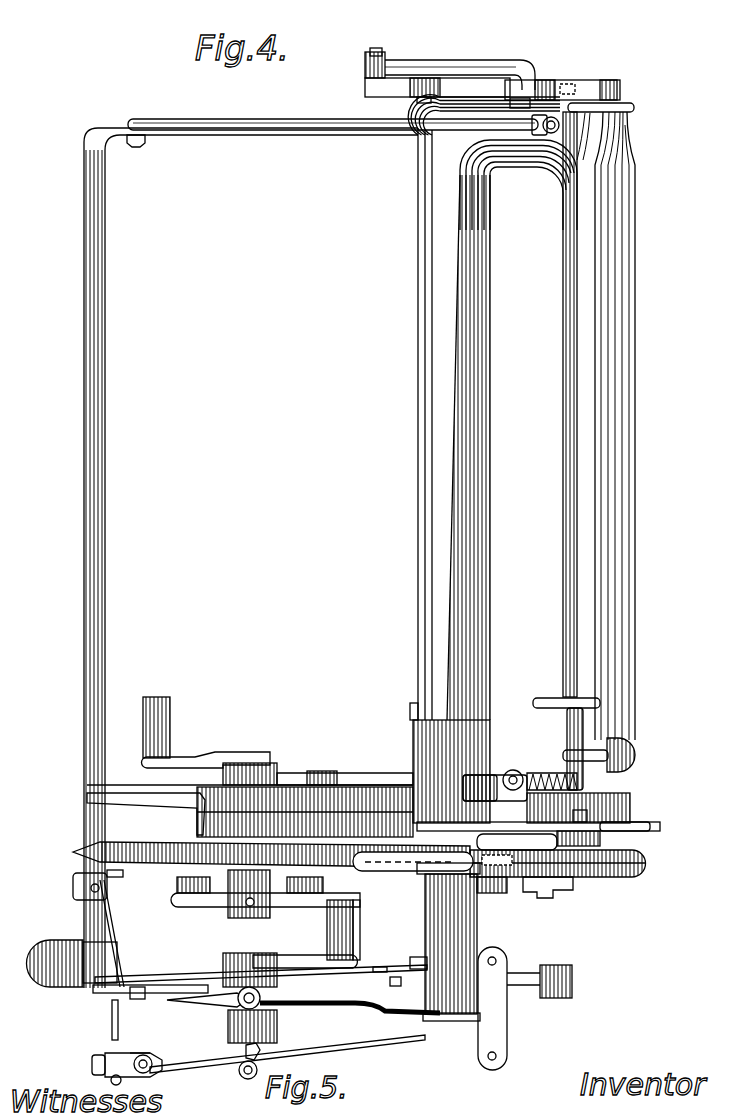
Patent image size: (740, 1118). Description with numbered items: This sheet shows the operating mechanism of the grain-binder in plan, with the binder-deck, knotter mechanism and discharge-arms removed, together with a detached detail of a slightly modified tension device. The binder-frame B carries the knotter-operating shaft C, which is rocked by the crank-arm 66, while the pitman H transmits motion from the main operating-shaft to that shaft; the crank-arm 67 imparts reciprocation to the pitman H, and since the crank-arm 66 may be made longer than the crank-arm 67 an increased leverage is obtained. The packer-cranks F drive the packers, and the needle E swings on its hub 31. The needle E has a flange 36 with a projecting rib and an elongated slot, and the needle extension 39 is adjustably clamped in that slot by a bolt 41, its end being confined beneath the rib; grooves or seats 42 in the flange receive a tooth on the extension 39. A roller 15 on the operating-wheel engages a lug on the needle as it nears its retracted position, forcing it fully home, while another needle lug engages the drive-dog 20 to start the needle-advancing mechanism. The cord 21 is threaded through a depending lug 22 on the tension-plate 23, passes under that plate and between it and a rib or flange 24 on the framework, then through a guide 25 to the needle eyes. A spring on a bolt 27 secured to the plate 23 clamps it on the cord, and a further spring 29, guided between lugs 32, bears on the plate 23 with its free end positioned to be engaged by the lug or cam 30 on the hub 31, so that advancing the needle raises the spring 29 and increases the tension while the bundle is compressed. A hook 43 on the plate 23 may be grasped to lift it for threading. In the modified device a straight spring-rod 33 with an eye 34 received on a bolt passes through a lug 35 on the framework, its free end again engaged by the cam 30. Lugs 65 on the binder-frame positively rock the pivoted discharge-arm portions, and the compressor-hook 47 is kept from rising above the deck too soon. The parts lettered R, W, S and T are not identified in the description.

In FIG. 4, the pitman H is at (449, 72).
In FIG. 4, the crank-arm 66 is at (562, 93).
In FIG. 4, the crank-arm 67 is at (384, 82).
In FIG. 4, the knotter-operating shaft C is at (612, 106).
In FIG. 4, the binder-frame B is at (630, 416).
In FIG. 4, the lugs 65 is at (628, 745).
In FIG. 4, the compressor-hook 47 is at (602, 838).
In FIG. 4, the packer-cranks F is at (190, 755).
In FIG. 4, the needle E is at (157, 845).
In FIG. 4, the needle extension 39 is at (590, 868).
In FIG. 4, the bolt 41 is at (413, 854).
In FIG. 4, the flange 36 is at (417, 864).
In FIG. 4, the hub of the needle 31 is at (428, 905).
In FIG. 4, the base R is at (463, 1015).
In FIG. 4, the link W is at (502, 1026).
In FIG. 4, the roller 15 is at (509, 877).
In FIG. 4, the grooves or seats 42 is at (489, 893).
In FIG. 4, the drive-dog 20 is at (226, 878).
In FIG. 4, the lug or cam 30 is at (413, 960).
In FIG. 4, the lugs 32 is at (372, 1010).
In FIG. 4, the slide S is at (350, 995).
In FIG. 4, the bolt 27 is at (152, 990).
In FIG. 5, the bolt 27 is at (160, 1072).
In FIG. 4, the rib or flange 24 is at (176, 1000).
In FIG. 4, the spring 29 is at (210, 1006).
In FIG. 4, the trip T is at (270, 1037).
In FIG. 4, the hook 43 is at (100, 1000).
In FIG. 5, the hook 43 is at (92, 1064).
In FIG. 4, the guide 25 is at (108, 886).
In FIG. 4, the cord 21 is at (108, 927).
In FIG. 4, the depending lug 22 is at (110, 1010).
In FIG. 5, the depending lug 22 is at (122, 1081).
In FIG. 4, the tension-plate 23 is at (130, 990).
In FIG. 5, the tension-plate 23 is at (132, 1066).
In FIG. 5, the eye 34 is at (162, 1062).
In FIG. 5, the lug 35 is at (262, 1048).
In FIG. 5, the spring-rod 33 is at (240, 1076).